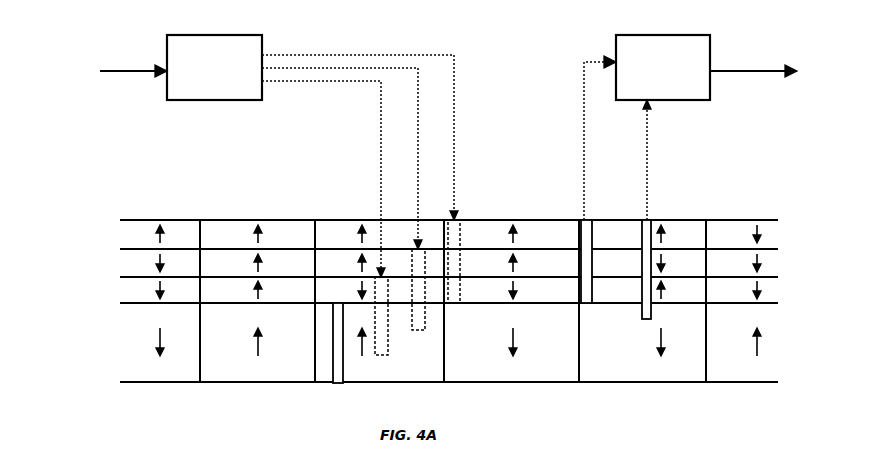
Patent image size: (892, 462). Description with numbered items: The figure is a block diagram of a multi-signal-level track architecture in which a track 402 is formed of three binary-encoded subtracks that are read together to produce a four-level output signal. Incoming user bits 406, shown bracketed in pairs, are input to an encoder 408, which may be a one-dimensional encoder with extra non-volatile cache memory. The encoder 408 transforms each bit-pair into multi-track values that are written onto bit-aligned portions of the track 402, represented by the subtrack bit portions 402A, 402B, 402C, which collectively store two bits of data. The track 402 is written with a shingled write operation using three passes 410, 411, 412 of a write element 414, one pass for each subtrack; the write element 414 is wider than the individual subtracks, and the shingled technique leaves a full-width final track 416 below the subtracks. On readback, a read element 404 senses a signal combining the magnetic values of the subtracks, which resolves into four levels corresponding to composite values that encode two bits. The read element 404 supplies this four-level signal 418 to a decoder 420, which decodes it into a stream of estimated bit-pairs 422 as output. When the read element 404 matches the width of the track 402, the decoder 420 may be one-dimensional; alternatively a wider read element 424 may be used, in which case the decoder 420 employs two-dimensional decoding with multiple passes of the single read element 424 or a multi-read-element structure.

The track 402 is at (111, 220).
The subtrack bit portion 402A is at (235, 243).
The subtrack bit portion 402B is at (232, 268).
The subtrack bit portion 402C is at (228, 292).
The read element 404 is at (583, 220).
The user bits 406 is at (112, 42).
The encoder 408 is at (234, 34).
The write pass 410 is at (425, 55).
The write pass 411 is at (343, 67).
The write pass 412 is at (365, 83).
The write element 414 is at (333, 383).
The full-width final track 416 is at (111, 305).
The four-level signal 418 is at (584, 62).
The decoder 420 is at (626, 35).
The estimated bit-pairs 422 is at (768, 48).
The wider read element 424 is at (652, 220).